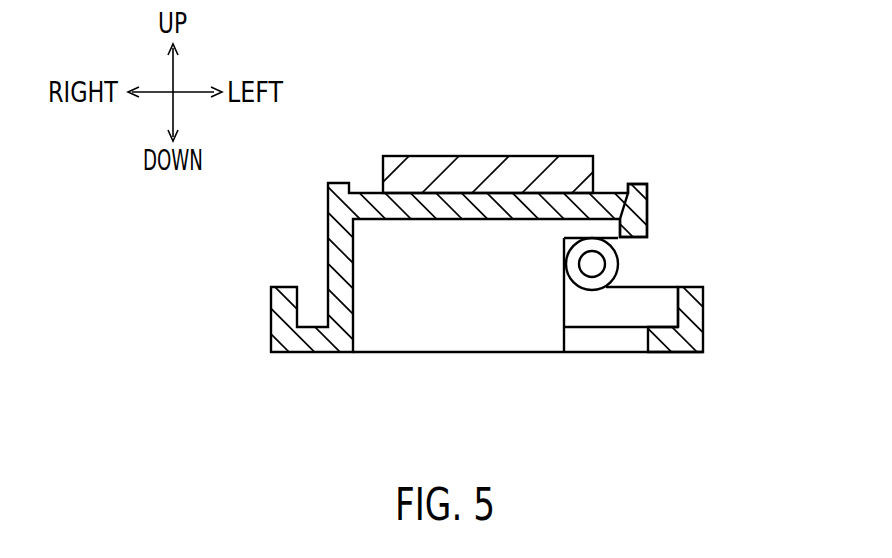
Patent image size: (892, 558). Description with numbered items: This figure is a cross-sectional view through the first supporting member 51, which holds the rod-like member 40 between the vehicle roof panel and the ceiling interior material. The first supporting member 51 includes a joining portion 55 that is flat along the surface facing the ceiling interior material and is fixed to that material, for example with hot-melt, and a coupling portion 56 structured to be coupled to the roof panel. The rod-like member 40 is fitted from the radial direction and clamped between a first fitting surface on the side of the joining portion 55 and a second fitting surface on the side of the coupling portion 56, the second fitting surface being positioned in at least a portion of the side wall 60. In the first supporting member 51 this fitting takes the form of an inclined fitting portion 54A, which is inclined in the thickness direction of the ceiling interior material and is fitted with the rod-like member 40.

The rod-like member 40 is at (606, 264).
The first supporting member 51 is at (637, 183).
The inclined fitting portion 54A is at (617, 243).
The joining portion 55 is at (479, 354).
The coupling portion 56 is at (478, 156).
The side wall 60 is at (623, 307).